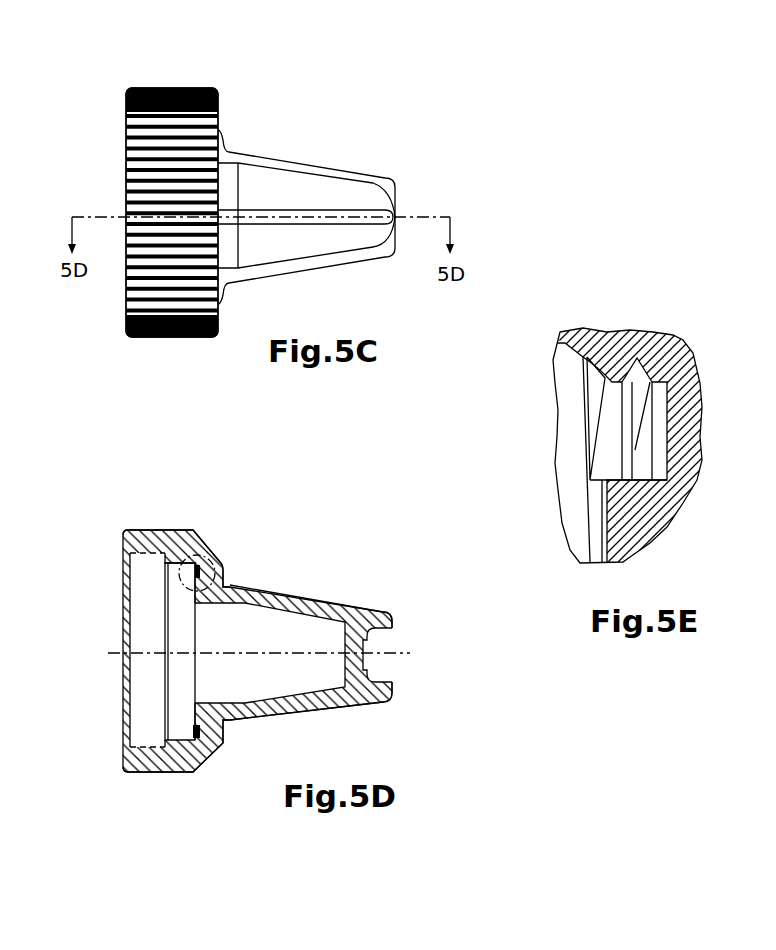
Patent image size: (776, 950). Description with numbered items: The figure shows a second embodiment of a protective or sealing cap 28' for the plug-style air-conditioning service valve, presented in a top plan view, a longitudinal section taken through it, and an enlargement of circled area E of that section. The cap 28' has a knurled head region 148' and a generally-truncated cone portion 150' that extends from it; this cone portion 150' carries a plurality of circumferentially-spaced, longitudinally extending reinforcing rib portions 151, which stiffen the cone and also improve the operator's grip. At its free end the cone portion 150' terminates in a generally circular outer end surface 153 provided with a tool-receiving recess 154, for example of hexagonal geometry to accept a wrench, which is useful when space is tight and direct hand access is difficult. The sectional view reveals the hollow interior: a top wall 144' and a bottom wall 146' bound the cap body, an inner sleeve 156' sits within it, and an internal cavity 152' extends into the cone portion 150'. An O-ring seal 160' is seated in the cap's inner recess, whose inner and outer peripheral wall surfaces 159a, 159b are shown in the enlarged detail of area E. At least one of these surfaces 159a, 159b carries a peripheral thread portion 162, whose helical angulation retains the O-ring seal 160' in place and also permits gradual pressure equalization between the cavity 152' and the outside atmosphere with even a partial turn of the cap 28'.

In FIG. 5C, the sealing cap 28' is at (261, 180).
In FIG. 5D, the sealing cap 28' is at (235, 678).
In FIG. 5C, the knurled knob 148' is at (191, 185).
In FIG. 5C, the generally-truncated cone portion 150' is at (306, 205).
In FIG. 5D, the generally-truncated cone portion 150' is at (306, 621).
In FIG. 5C, the reinforcing rib portions 151 is at (393, 182).
In FIG. 5D, the cap wall 144' is at (176, 602).
In FIG. 5D, the circled area E is at (213, 558).
In FIG. 5D, the inner sleeve 156' is at (132, 651).
In FIG. 5D, the cap bottom wall 146' is at (141, 738).
In FIG. 5D, the O-ring seal 160' is at (185, 762).
In FIG. 5D, the cavity 152' is at (313, 622).
In FIG. 5D, the outer end surface 153 is at (382, 616).
In FIG. 5D, the tool-receiving recess 154 is at (385, 637).
In FIG. 5E, the outer peripheral wall surface 159b is at (603, 377).
In FIG. 5E, the peripheral thread portion 162 is at (653, 378).
In FIG. 5E, the inner peripheral wall surface 159a is at (637, 482).